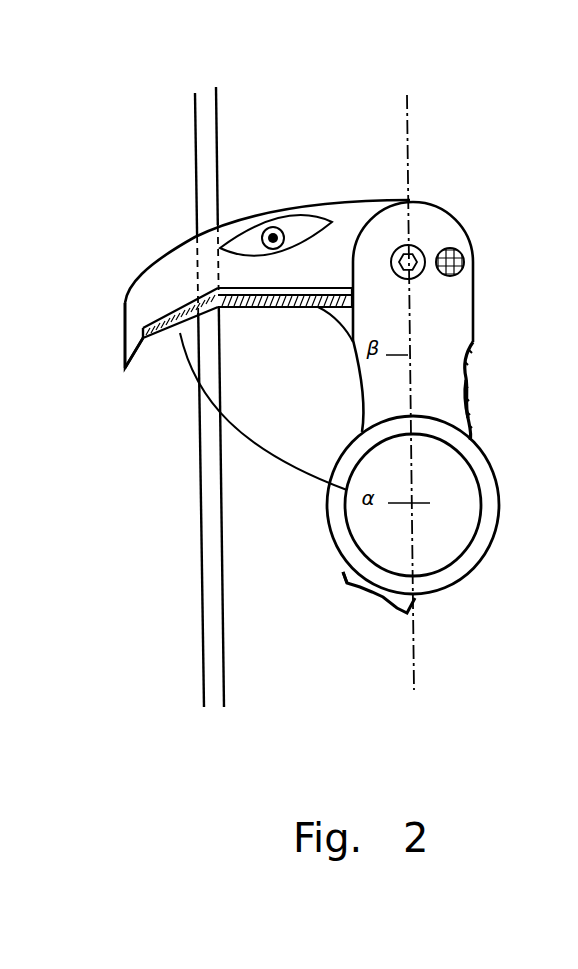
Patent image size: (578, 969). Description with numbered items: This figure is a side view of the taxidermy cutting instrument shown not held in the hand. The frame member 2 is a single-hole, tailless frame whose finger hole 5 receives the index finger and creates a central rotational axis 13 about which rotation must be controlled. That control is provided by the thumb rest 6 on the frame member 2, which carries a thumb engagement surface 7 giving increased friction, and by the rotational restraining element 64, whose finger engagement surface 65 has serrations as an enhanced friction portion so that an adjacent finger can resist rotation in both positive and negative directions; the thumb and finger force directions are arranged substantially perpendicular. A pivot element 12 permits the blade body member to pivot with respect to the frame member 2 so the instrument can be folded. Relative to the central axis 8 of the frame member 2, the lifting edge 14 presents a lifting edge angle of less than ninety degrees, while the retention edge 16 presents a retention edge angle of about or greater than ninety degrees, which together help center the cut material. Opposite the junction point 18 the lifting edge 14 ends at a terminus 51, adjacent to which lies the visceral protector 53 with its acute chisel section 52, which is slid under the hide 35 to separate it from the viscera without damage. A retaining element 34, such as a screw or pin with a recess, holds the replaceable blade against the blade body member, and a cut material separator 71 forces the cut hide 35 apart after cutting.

The frame member 2 is at (447, 317).
The finger hole 5 is at (437, 527).
The thumb rest 6 is at (470, 375).
The thumb engagement surface 7 is at (467, 397).
The central axis 8 is at (415, 645).
The pivot element 12 is at (425, 253).
The central rotational axis 13 is at (430, 503).
The lifting edge 14 is at (168, 337).
The retention edge 16 is at (267, 310).
The junction point 18 is at (205, 310).
The retaining element 34 is at (293, 230).
The hide 35 is at (216, 167).
The terminus 51 is at (143, 347).
The chisel section 52 is at (125, 366).
The visceral protector 53 is at (125, 320).
The rotational restraining element 64 is at (347, 572).
The finger engagement surface 65 is at (375, 595).
The cut material separator 71 is at (185, 263).